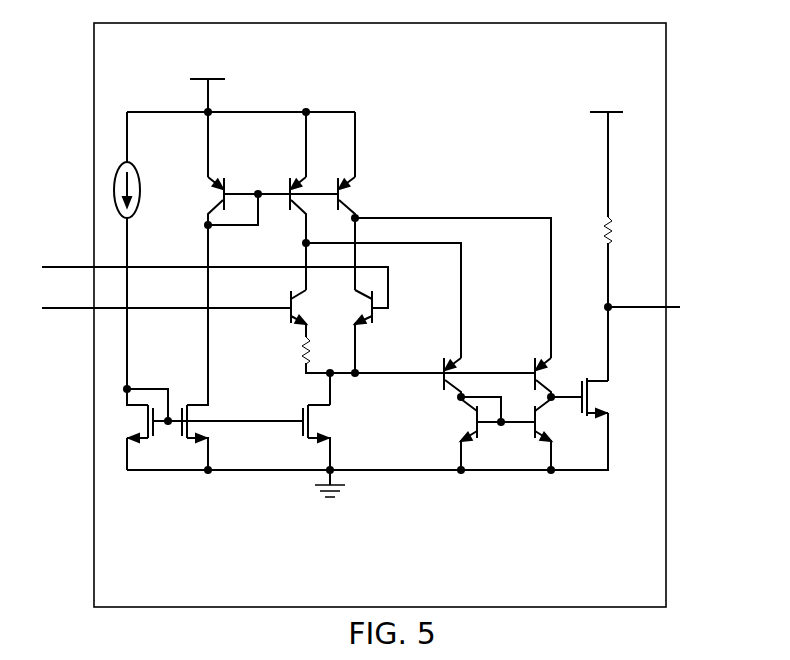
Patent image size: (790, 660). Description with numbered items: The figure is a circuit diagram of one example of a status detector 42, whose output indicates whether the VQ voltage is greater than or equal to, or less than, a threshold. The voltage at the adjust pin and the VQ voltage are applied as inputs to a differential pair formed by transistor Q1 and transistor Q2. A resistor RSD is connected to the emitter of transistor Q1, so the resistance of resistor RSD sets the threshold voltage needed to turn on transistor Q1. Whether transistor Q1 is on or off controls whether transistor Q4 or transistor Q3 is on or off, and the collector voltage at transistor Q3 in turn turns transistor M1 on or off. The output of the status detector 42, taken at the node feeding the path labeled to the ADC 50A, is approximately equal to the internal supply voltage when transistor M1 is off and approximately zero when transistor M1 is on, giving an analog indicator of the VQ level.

The status detector 42 is at (343, 315).
The ADC 50A is at (748, 331).
The transistor Q1 is at (283, 306).
The transistor Q2 is at (381, 331).
The transistor Q3 is at (560, 370).
The transistor Q4 is at (472, 370).
The transistor M1 is at (613, 397).
The resistor RSD is at (281, 350).